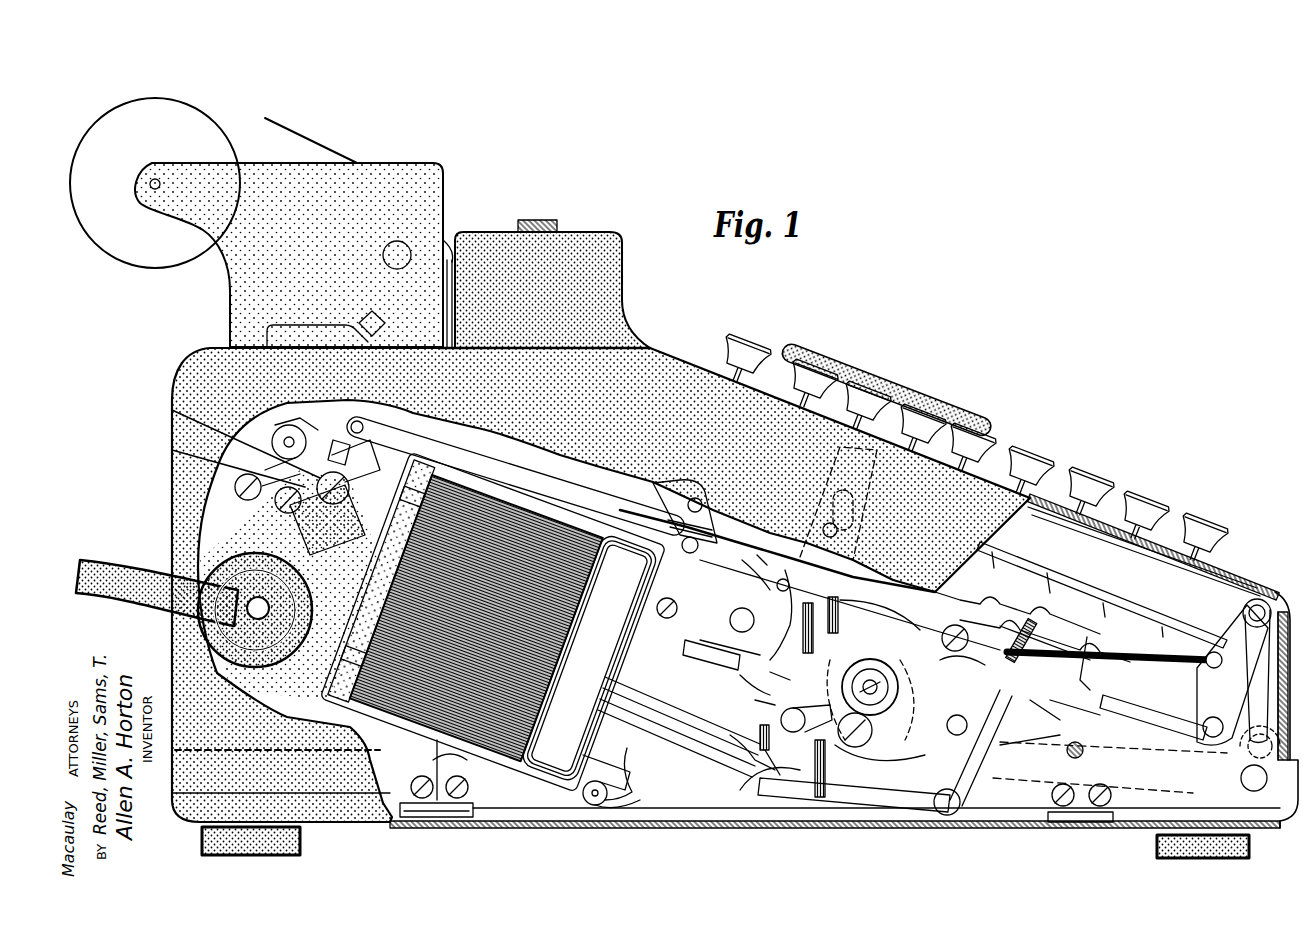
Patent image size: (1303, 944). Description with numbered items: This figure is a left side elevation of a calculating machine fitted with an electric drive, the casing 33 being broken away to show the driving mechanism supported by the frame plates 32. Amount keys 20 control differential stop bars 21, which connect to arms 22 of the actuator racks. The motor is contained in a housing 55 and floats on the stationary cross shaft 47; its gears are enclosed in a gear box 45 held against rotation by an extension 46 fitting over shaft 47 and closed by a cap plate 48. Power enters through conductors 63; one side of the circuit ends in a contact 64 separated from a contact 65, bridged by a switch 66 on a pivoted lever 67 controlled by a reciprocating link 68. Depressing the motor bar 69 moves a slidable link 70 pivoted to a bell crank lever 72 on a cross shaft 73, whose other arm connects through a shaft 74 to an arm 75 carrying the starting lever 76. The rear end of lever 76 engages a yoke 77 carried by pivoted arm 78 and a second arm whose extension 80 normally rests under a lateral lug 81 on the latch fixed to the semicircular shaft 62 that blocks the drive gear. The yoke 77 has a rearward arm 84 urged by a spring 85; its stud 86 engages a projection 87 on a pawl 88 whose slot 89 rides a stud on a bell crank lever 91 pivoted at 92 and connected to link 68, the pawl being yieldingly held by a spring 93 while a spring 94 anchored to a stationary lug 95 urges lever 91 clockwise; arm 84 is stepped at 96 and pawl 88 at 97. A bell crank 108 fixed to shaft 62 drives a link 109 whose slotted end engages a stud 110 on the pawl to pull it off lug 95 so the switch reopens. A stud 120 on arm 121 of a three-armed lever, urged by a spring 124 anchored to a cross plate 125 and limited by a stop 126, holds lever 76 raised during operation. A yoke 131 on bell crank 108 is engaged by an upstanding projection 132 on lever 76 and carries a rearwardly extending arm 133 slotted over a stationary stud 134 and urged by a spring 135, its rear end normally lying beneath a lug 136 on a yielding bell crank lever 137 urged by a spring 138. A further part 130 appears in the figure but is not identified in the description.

The amount keys 20 is at (1145, 502).
The differential stop bars 21 is at (1049, 594).
The arms 22 is at (680, 517).
The frame plates 32 is at (530, 802).
The casing 33 is at (694, 355).
The gear box 45 is at (610, 790).
The extension 46 is at (633, 782).
The stationary shaft 47 is at (636, 800).
The cap plate 48 is at (907, 610).
The housing 55 is at (563, 507).
The semicircular shaft 62 is at (883, 688).
The conductors 63 is at (108, 560).
The contact 64 is at (240, 462).
The contact 65 is at (272, 438).
The switch 66 is at (172, 408).
The pivoted lever 67 is at (340, 442).
The reciprocating link 68 is at (497, 474).
The motor bar 69 is at (905, 395).
The slidable link 70 is at (873, 497).
The bell crank lever 72 is at (1167, 790).
The cross shaft 73 is at (1242, 779).
The shaft 74 is at (1245, 765).
The arm 75 is at (1256, 676).
The starting lever 76 is at (1245, 689).
The yoke 77 is at (958, 812).
The pivoted arm 78 is at (979, 748).
The extension 80 is at (962, 655).
The lateral lug 81 is at (1070, 650).
The rearwardly extending arm 84 is at (890, 800).
The spring 85 is at (790, 832).
The stud 86 is at (735, 745).
The projection 87 is at (679, 727).
The pawl 88 is at (743, 676).
The slot 89 is at (765, 667).
The bell crank lever 91 is at (742, 648).
The pivot 92 is at (657, 608).
The spring 93 is at (824, 634).
The spring 94 is at (806, 708).
The stationary lug 95 is at (741, 751).
The step 96 is at (744, 772).
The step 97 is at (767, 787).
The bell crank 108 is at (887, 723).
The link 109 is at (940, 722).
The stud 110 is at (749, 694).
The stud 120 is at (1082, 757).
The arm 121 is at (1078, 721).
The spring 124 is at (1000, 790).
The cross plate 125 is at (1085, 670).
The stop 126 is at (1153, 717).
The rod 130 is at (1114, 667).
The yoke 131 is at (1014, 690).
The upstanding projection 132 is at (1049, 726).
The rearwardly extending arm 133 is at (880, 631).
The stationary stud 134 is at (837, 597).
The spring 135 is at (1102, 595).
The lug 136 is at (788, 605).
The yielding bell crank lever 137 is at (745, 585).
The spring 138 is at (691, 649).